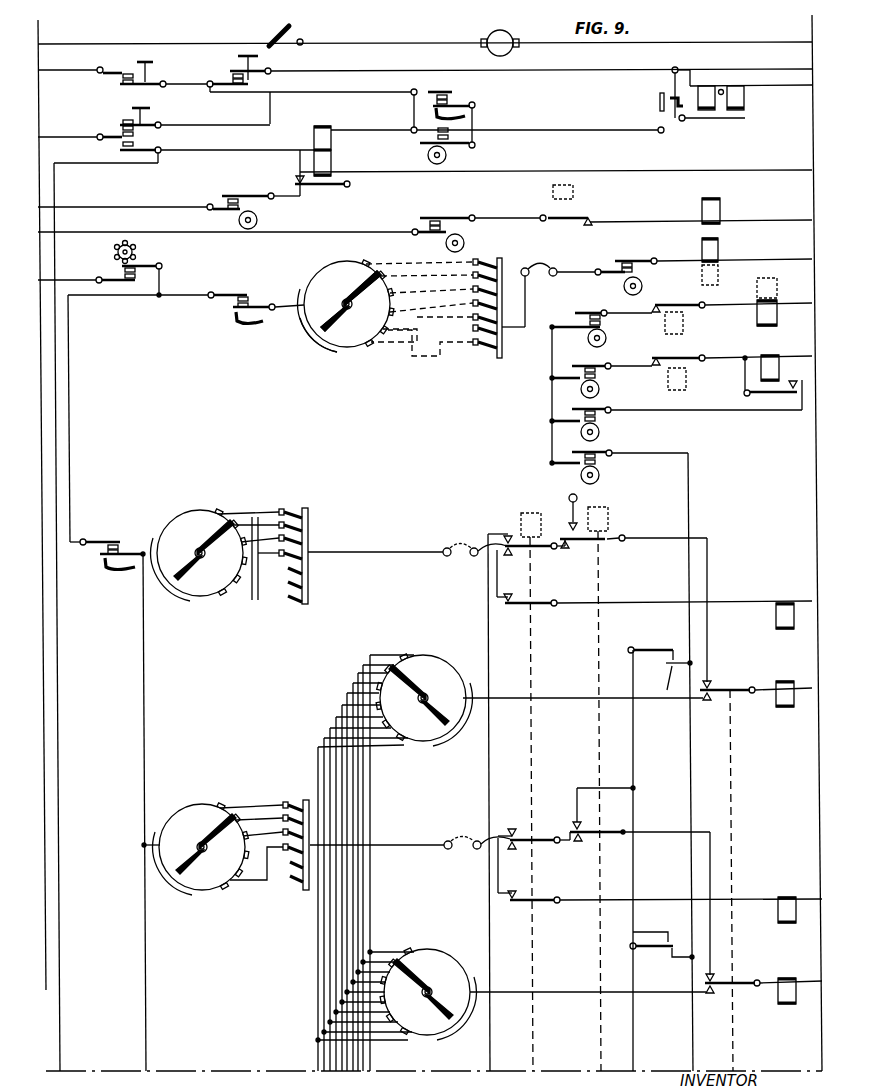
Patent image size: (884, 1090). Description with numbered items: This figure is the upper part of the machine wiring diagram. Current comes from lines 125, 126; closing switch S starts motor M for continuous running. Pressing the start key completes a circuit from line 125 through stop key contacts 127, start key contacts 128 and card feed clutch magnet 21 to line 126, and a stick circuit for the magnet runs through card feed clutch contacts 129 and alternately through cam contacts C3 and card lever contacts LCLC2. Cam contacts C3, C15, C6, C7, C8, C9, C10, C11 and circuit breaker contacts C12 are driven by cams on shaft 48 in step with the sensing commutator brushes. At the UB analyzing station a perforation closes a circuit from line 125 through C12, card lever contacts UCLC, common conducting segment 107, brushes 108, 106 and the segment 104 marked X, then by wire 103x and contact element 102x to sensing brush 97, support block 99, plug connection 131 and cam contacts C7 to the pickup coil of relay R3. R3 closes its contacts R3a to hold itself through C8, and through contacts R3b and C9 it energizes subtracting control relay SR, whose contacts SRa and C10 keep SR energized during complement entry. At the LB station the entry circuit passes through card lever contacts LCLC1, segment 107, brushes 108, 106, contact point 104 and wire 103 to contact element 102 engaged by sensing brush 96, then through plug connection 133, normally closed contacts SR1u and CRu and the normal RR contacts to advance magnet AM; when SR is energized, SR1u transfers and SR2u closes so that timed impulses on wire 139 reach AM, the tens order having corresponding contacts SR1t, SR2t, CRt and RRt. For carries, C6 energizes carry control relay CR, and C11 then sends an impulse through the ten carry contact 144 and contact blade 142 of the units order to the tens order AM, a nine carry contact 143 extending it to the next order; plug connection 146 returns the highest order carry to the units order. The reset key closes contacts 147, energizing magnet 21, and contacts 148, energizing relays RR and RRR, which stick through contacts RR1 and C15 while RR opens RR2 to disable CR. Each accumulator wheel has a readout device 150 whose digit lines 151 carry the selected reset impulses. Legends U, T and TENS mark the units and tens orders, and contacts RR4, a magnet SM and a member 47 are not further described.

The line 125 is at (40, 30).
The line 126 is at (812, 30).
The stop key contacts 127 is at (108, 81).
The start key contacts 128 is at (255, 82).
The card feed clutch contacts 129 is at (660, 108).
The card feed clutch magnet 21 is at (745, 98).
The reset key contacts 147 is at (148, 123).
The reset key contacts 148 is at (140, 146).
The shaft 48 is at (134, 251).
The UCLC contact hook 47 is at (296, 319).
The contact point 104 is at (368, 347).
The brush 106 is at (360, 286).
The common conducting segment 107 is at (316, 338).
The brush 108 is at (330, 330).
The wire 103x is at (440, 346).
The contact element 102x is at (470, 346).
The X sensing brush 97 is at (490, 350).
The support block 99 is at (505, 343).
The plug connection 131 is at (537, 266).
The plug connection 133 is at (446, 547).
The plug connection 146 is at (568, 495).
The contact element 102 is at (281, 510).
The sensing brush 96 is at (292, 508).
The wire connection 103 is at (258, 598).
The carry contact blade 142 is at (648, 656).
The "10" carry contact 144 is at (675, 690).
The "9" carry control contact 143 is at (662, 932).
The readout device 150 is at (446, 742).
The digit lines 151 is at (325, 818).
The wire 139 is at (490, 1042).
The switch S is at (305, 32).
The motor M is at (500, 43).
The cam contacts C3 is at (425, 141).
The cam contacts C15 is at (222, 198).
The cam contacts C6 is at (428, 218).
The cam contacts C7 is at (606, 268).
The cam contacts C8 is at (592, 310).
The cam contacts C9 is at (570, 372).
The cam contacts C10 is at (572, 416).
The cam contacts C11 is at (572, 456).
The circuit breaker contacts C12 is at (118, 276).
The relay RRR is at (314, 134).
The relay RR is at (340, 164).
The contacts RR1 is at (295, 180).
The contacts RR2 is at (552, 192).
The relay contact RR4 is at (722, 685).
The carry control relay CR is at (720, 208).
The relay R3 is at (720, 250).
The contacts R3a is at (672, 290).
The relay contacts R3b is at (652, 363).
The subtracting control relay SR is at (772, 366).
The contacts SRa is at (786, 396).
The SR1 contacts of the units order SR1u is at (490, 558).
The SR2 contacts of the units order SR2u is at (500, 605).
The CR relay contacts of the units order CRu is at (588, 545).
The subtract magnet SM is at (775, 620).
The advance magnet AM is at (775, 701).
The SR1 contacts of the tens order SR1t is at (505, 826).
The SR2 contacts of the tens order SR2t is at (505, 896).
The CR relay contacts of the tens order CRt is at (593, 842).
The RR relay contacts of the tens order RRt is at (725, 979).
The analyzing station UB is at (502, 305).
The analyzing station LB is at (247, 535).
The card lever contacts UCLC is at (262, 283).
The lower card lever contacts LCLC1 is at (118, 536).
The card lever contacts LCLC2 is at (455, 88).
The units contact U is at (617, 859).
The tens contact T is at (617, 950).
The tens bar TENS is at (232, 836).